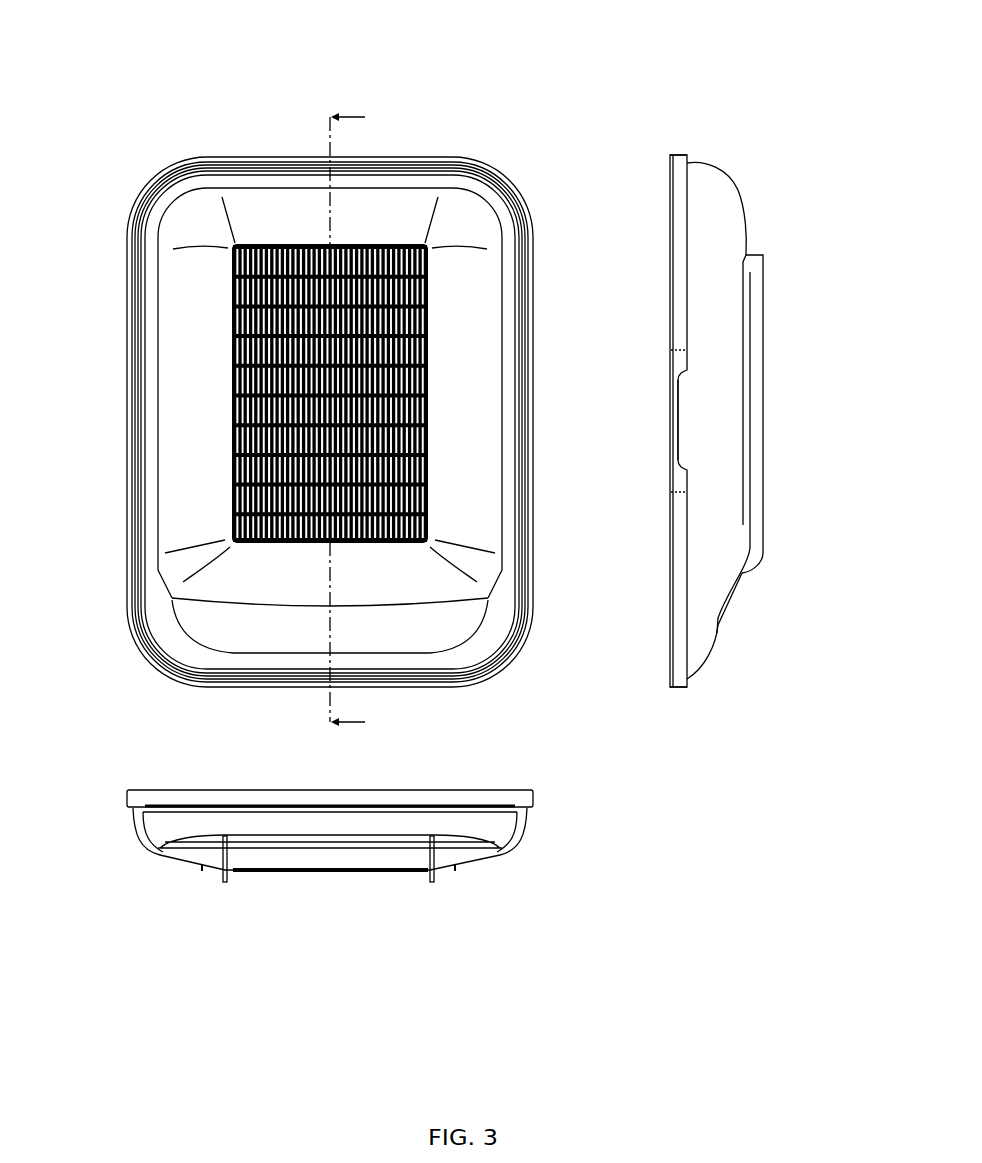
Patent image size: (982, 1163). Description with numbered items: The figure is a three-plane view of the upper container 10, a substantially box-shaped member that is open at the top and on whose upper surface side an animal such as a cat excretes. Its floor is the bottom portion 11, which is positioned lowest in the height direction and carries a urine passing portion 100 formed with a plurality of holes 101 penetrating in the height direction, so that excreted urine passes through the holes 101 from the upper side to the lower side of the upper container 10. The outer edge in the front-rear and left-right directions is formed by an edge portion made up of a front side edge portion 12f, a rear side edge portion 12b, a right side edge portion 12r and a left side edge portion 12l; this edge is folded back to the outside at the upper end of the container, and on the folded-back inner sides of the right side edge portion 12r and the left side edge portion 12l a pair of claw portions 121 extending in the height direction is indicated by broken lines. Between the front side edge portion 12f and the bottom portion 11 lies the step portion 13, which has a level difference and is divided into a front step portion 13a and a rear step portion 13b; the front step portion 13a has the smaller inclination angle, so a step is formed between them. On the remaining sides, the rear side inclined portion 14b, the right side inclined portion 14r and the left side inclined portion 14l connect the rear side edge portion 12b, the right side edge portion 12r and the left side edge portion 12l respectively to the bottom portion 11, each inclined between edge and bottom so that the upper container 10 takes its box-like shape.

The upper container 10 is at (515, 100).
The bottom portion 11 is at (428, 290).
The urine passing portion 100 is at (290, 876).
The holes 101 is at (233, 285).
The rear side edge portion 12b is at (272, 157).
The front side edge portion 12f is at (423, 688).
The left side edge portion 12l is at (128, 415).
The right side edge portion 12r is at (533, 410).
The claw portions 121 is at (678, 352).
The step portion 13 is at (585, 577).
The front step portion 13a is at (437, 625).
The rear step portion 13b is at (437, 580).
The rear side inclined portion 14b is at (395, 200).
The left side inclined portion 14l is at (188, 368).
The right side inclined portion 14r is at (478, 360).